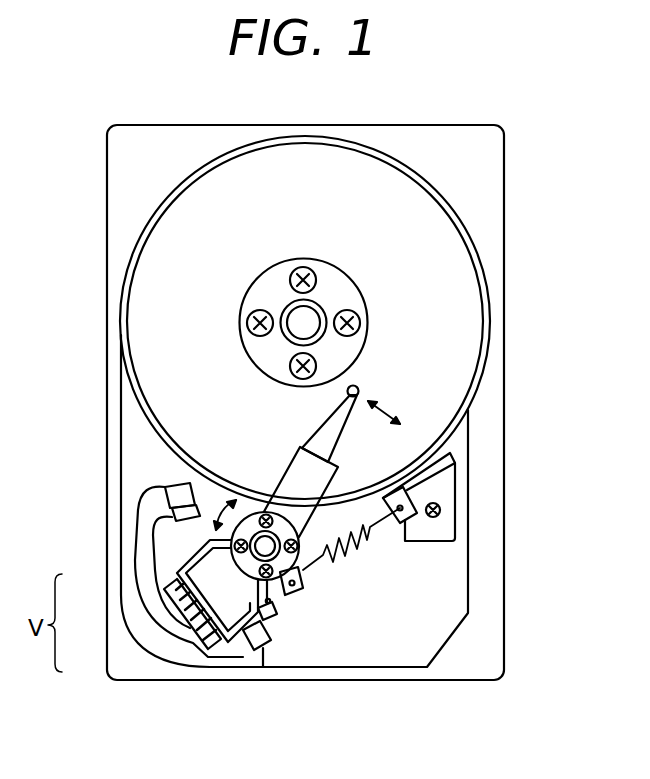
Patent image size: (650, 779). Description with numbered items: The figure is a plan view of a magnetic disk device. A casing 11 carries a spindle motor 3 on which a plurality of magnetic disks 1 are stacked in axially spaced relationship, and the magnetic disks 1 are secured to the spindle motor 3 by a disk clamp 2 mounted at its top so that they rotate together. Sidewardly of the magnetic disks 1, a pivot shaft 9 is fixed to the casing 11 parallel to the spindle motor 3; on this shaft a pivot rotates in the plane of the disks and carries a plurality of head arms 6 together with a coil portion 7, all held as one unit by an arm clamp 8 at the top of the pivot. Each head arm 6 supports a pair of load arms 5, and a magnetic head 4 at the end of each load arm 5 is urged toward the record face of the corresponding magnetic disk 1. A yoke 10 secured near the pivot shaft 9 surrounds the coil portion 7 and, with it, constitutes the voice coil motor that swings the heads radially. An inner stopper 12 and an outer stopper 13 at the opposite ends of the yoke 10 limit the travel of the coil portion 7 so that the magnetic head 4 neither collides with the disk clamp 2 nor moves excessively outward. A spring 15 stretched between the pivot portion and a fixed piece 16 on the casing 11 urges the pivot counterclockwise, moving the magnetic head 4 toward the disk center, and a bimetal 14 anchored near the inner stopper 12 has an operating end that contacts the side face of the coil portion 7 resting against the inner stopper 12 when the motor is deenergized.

The magnetic disk 1 is at (368, 175).
The disk clamp 2 is at (330, 283).
The spindle motor 3 is at (309, 321).
The magnetic head 4 is at (360, 388).
The load arm 5 is at (332, 438).
The head arm 6 is at (302, 458).
The coil portion 7 is at (170, 588).
The arm clamp 8 is at (255, 520).
The pivot shaft 9 is at (268, 542).
The yoke 10 is at (160, 618).
The casing 11 is at (465, 130).
The inner stopper 12 is at (273, 632).
The outer stopper 13 is at (163, 490).
The bimetal 14 is at (275, 612).
The spring 15 is at (370, 537).
The fixed piece 16 is at (443, 487).